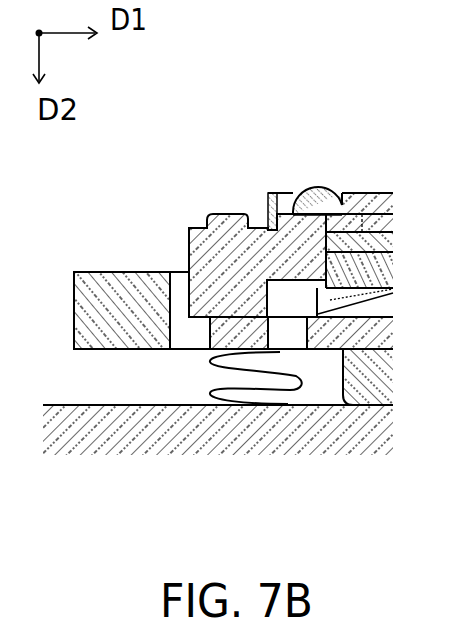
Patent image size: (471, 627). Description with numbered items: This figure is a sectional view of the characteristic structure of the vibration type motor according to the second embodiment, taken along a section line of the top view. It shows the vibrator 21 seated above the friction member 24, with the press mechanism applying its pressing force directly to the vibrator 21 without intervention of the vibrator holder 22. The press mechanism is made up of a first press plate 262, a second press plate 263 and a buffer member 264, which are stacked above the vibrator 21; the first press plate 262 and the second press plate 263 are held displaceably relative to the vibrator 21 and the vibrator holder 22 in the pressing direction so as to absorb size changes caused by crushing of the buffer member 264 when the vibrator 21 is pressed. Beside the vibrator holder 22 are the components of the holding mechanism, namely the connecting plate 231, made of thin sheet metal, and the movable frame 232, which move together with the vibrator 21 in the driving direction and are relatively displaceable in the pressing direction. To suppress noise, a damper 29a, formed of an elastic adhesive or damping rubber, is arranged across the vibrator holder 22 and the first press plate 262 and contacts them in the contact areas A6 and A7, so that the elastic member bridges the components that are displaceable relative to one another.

The vibrator 21 is at (371, 302).
The vibrator holder 22 is at (253, 282).
The friction member 24 is at (77, 435).
The damper 29a is at (320, 187).
The connecting plate 231 is at (260, 228).
The movable frame 232 is at (122, 328).
The first press plate 262 is at (380, 206).
The second press plate 263 is at (373, 242).
The buffer member 264 is at (384, 283).
The contact area A6 is at (293, 213).
The contact area A7 is at (338, 194).